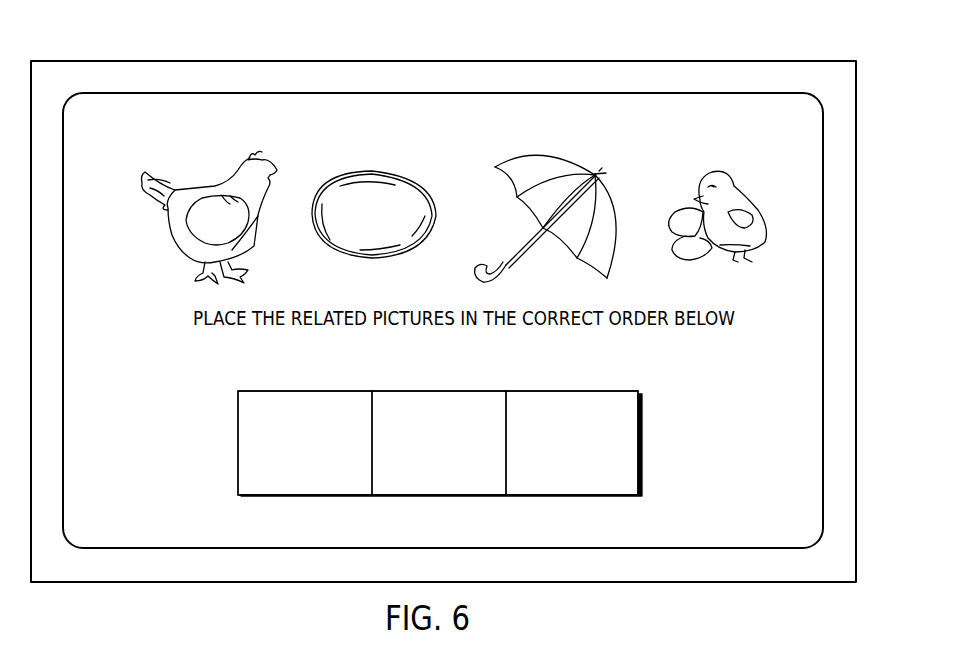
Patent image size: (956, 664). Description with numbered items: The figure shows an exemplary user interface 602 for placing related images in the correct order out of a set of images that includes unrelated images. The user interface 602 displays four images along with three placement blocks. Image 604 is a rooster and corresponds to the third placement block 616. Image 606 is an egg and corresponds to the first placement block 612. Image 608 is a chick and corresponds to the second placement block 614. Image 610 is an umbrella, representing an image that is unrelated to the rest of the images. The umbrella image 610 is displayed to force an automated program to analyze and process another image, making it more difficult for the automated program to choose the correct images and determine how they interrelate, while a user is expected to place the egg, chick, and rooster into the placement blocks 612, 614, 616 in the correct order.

The user interface 602 is at (717, 61).
The image 604 is at (197, 191).
The image 606 is at (367, 170).
The image 608 is at (715, 170).
The image 610 is at (560, 160).
The first placement block 612 is at (278, 390).
The second placement block 614 is at (443, 390).
The third placement block 616 is at (590, 390).